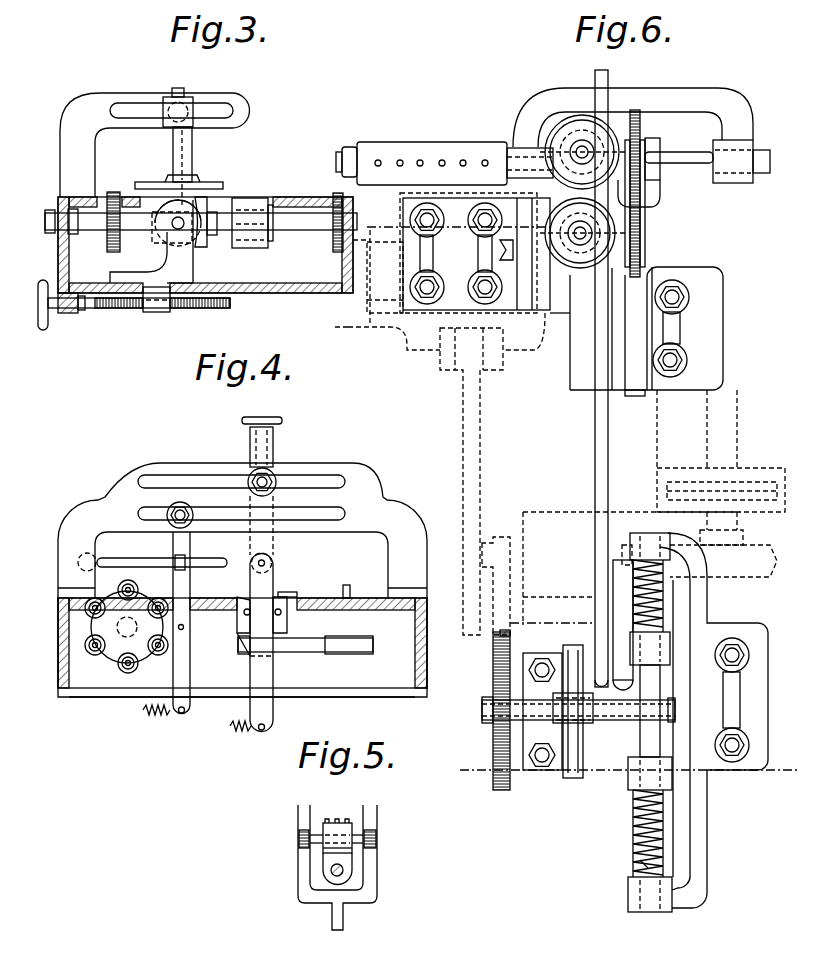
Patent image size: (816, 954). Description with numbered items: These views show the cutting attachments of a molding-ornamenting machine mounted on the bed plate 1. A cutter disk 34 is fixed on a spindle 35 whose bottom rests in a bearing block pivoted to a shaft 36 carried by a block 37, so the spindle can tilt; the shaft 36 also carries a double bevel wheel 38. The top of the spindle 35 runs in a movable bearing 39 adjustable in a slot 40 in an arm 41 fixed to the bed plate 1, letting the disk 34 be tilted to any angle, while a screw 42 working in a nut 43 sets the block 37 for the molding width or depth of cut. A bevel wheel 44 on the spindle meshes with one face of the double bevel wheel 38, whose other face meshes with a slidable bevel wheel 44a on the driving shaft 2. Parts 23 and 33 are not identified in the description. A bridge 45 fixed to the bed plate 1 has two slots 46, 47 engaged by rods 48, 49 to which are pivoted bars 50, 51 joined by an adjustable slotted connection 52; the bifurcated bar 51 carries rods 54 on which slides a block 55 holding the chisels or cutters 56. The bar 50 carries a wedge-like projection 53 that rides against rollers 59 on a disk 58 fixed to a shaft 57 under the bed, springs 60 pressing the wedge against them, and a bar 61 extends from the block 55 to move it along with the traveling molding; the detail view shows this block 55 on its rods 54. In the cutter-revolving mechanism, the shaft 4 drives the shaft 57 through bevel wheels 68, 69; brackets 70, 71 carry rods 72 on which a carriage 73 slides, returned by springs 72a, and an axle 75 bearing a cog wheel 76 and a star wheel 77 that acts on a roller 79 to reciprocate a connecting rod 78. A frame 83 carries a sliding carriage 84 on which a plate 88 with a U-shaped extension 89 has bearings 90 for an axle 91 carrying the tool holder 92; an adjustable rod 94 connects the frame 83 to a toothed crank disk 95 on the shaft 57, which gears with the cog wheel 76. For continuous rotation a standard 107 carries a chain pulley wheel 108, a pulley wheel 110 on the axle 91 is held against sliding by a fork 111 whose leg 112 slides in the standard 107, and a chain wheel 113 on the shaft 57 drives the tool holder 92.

In FIG. 3, the bed plate 1 is at (58, 200).
In FIG. 4, the bed plate 1 is at (58, 660).
In FIG. 3, the shaft 2 is at (318, 228).
In FIG. 6, the shaft 4 is at (730, 404).
In FIG. 3, the block 23 is at (276, 197).
In FIG. 4, the block 23 is at (348, 588).
In FIG. 3, the gear 33 is at (338, 194).
In FIG. 3, the cutter disk 34 is at (214, 186).
In FIG. 3, the spindle 35 is at (186, 158).
In FIG. 3, the shaft 36 is at (170, 242).
In FIG. 3, the block 37 is at (186, 272).
In FIG. 3, the double bevel wheel 38 is at (160, 230).
In FIG. 3, the movable bearing 39 is at (194, 100).
In FIG. 3, the slot 40 is at (230, 112).
In FIG. 3, the arm 41 is at (80, 112).
In FIG. 3, the screw 42 is at (216, 308).
In FIG. 3, the nut 43 is at (158, 312).
In FIG. 3, the bevel wheel 44 is at (162, 196).
In FIG. 3, the bevel wheel 44a is at (207, 240).
In FIG. 4, the bridge 45 is at (88, 507).
In FIG. 4, the slot 46 is at (318, 480).
In FIG. 4, the slot 47 is at (322, 512).
In FIG. 4, the rod 48 is at (182, 512).
In FIG. 4, the rod 49 is at (270, 476).
In FIG. 4, the bar 50 is at (184, 668).
In FIG. 4, the bar 51 is at (270, 585).
In FIG. 5, the bar 51 is at (376, 808).
In FIG. 4, the adjustable slotted connection 52 is at (219, 563).
In FIG. 4, the wedge or cam shaped projection 53 is at (185, 627).
In FIG. 4, the rods 54 is at (246, 635).
In FIG. 5, the rods 54 is at (360, 836).
In FIG. 4, the block 55 is at (290, 638).
In FIG. 5, the block 55 is at (330, 846).
In FIG. 4, the chisels or cutters 56 is at (297, 594).
In FIG. 5, the chisels or cutters 56 is at (337, 822).
In FIG. 4, the shaft 57 is at (117, 627).
In FIG. 4, the disk 58 is at (120, 650).
In FIG. 4, the smaller disks or rollers 59 is at (140, 594).
In FIG. 4, the springs 60 is at (193, 723).
In FIG. 4, the bar 61 is at (355, 648).
In FIG. 5, the bar 61 is at (345, 870).
In FIG. 6, the bevel wheel 68 is at (758, 562).
In FIG. 6, the bevel wheel 69 is at (672, 610).
In FIG. 6, the bracket 70 is at (700, 714).
In FIG. 6, the bracket 71 is at (530, 770).
In FIG. 6, the rods 72 is at (638, 818).
In FIG. 6, the springs 72a is at (641, 862).
In FIG. 6, the carriage 73 is at (630, 776).
In FIG. 6, the axle 75 is at (558, 745).
In FIG. 6, the cog wheel 76 is at (500, 792).
In FIG. 6, the star wheel 77 is at (578, 779).
In FIG. 6, the connecting rod 78 is at (608, 463).
In FIG. 6, the roller 79 is at (588, 724).
In FIG. 6, the frame 83 is at (522, 360).
In FIG. 6, the carriage 84 is at (445, 310).
In FIG. 6, the plate 88 is at (548, 310).
In FIG. 6, the extension 89 is at (538, 103).
In FIG. 6, the bearings 90 is at (514, 147).
In FIG. 6, the axle 91 is at (345, 150).
In FIG. 6, the tool holder 92 is at (413, 142).
In FIG. 6, the adjustable rod 94 is at (468, 447).
In FIG. 6, the crank disk 95 is at (500, 535).
In FIG. 6, the standard 107 is at (582, 366).
In FIG. 6, the chain pulley wheel 108 is at (641, 133).
In FIG. 6, the pulley wheel 110 is at (656, 176).
In FIG. 6, the fork 111 is at (652, 198).
In FIG. 6, the leg 112 is at (630, 397).
In FIG. 6, the chain wheel 113 is at (615, 570).